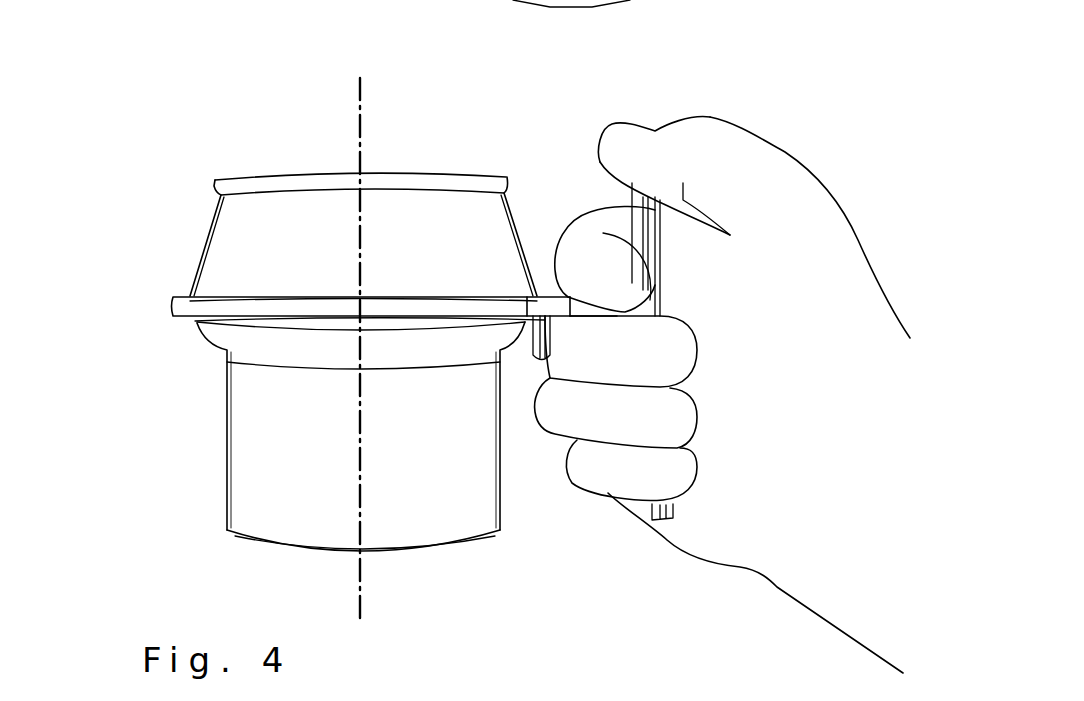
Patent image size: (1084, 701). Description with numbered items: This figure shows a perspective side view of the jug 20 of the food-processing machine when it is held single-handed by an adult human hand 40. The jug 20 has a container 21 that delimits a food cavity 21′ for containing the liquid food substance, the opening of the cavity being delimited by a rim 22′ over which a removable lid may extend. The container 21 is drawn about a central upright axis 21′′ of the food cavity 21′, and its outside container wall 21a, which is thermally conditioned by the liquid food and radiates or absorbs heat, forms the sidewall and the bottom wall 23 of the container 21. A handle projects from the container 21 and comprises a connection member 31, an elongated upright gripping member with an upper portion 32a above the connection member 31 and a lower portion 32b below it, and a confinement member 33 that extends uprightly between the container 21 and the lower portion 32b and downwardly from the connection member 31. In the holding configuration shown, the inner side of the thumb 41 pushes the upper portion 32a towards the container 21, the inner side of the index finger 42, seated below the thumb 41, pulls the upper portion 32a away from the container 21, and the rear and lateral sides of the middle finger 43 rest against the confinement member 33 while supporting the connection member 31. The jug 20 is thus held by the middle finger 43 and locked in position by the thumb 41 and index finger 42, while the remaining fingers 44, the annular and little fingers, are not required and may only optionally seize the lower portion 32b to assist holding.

The jug 20 is at (157, 175).
The container 21 is at (343, 471).
The outside container wall 21a is at (303, 415).
The food cavity 21′ is at (395, 207).
The central upright axis 21′′ is at (357, 90).
The rim 22′ is at (293, 177).
The bottom wall 23 is at (428, 587).
The connection member 31 is at (553, 302).
The upper portion 32a is at (638, 205).
The lower portion 32b is at (670, 518).
The confinement member 33 is at (535, 335).
The hand 40 is at (729, 357).
The thumb 41 is at (665, 137).
The index finger 42 is at (617, 282).
The middle finger 43 is at (650, 357).
The remaining fingers 44 is at (647, 422).